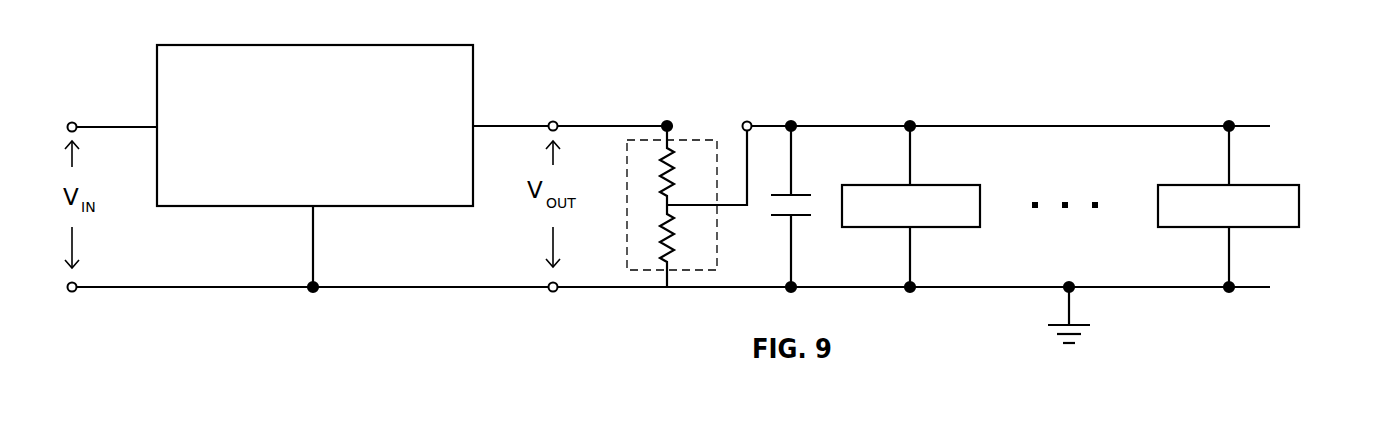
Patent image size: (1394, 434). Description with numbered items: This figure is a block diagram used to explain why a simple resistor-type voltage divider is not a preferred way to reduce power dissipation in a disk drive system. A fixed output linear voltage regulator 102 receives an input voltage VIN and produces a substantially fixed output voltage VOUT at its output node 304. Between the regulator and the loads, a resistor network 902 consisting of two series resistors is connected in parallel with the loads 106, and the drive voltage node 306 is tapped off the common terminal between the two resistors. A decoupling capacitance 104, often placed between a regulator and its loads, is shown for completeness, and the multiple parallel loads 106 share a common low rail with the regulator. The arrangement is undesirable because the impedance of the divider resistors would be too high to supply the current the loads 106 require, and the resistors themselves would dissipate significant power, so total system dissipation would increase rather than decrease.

The fixed output linear voltage regulator 102 is at (433, 45).
The output node 304 is at (553, 118).
The drive voltage node 306 is at (747, 118).
The resistor network 902 is at (697, 137).
The decoupling capacitance 104 is at (803, 222).
The loads 106 is at (960, 185).